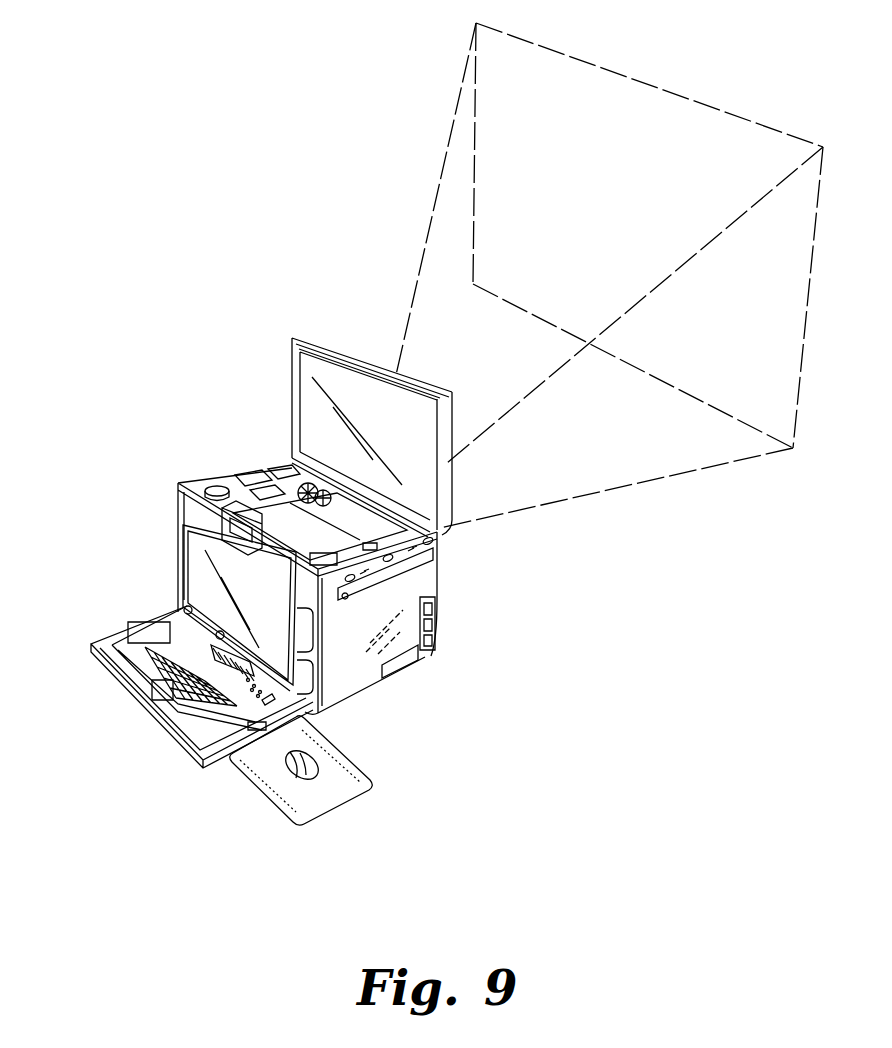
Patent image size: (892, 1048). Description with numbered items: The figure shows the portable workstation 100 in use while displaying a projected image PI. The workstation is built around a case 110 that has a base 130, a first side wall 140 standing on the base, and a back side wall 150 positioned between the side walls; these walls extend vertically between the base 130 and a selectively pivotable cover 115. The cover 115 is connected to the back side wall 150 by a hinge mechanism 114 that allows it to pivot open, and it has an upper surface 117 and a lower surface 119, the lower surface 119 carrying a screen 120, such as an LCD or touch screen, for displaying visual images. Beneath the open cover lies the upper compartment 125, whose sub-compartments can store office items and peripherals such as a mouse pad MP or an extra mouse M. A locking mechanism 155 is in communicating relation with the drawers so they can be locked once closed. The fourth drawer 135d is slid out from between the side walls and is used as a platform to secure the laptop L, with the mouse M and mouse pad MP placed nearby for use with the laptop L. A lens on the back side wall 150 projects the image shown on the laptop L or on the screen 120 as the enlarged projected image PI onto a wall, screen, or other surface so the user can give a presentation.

The portable workstation 100 is at (173, 196).
The case 110 is at (146, 492).
The hinge mechanism 114 is at (405, 503).
The selectively pivotable cover 115 is at (324, 333).
The upper surface 117 is at (433, 370).
The lower surface 119 is at (274, 376).
The screen 120 is at (412, 432).
The upper compartment 125 is at (227, 450).
The base 130 is at (368, 711).
The fourth drawer 135d is at (178, 742).
The first side wall 140 is at (158, 519).
The back side wall 150 is at (462, 580).
The locking mechanism 155 is at (203, 521).
The laptop L is at (116, 648).
The mouse M is at (283, 776).
The mouse pad MP is at (347, 793).
The projected image PI is at (664, 194).